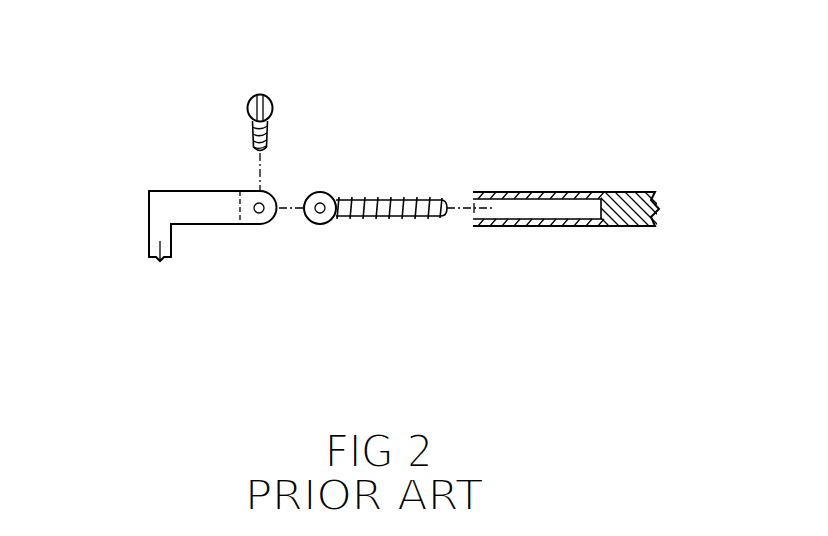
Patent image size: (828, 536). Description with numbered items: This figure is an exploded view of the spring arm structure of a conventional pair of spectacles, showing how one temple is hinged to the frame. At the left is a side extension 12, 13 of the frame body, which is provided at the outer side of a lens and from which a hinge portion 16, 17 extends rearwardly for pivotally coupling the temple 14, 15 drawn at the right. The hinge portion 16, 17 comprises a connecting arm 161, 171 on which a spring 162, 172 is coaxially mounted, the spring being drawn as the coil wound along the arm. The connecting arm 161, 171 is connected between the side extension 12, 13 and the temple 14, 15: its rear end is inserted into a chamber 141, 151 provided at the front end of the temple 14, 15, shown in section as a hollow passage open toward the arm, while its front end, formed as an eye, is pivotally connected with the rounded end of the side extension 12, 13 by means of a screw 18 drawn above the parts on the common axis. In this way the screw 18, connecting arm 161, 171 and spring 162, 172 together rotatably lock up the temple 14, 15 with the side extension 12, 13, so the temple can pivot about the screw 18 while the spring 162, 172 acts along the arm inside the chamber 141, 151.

The side extension 12 is at (192, 261).
The side extension 13 is at (160, 252).
The temple 14 is at (576, 203).
The temple 15 is at (576, 203).
The hinge portion 16 is at (406, 180).
The hinge portion 17 is at (406, 180).
The screw 18 is at (247, 111).
The chamber 141 is at (542, 246).
The chamber 151 is at (536, 209).
The connecting arm 161 is at (371, 260).
The connecting arm 171 is at (324, 228).
The spring 162 is at (382, 167).
The spring 172 is at (379, 198).